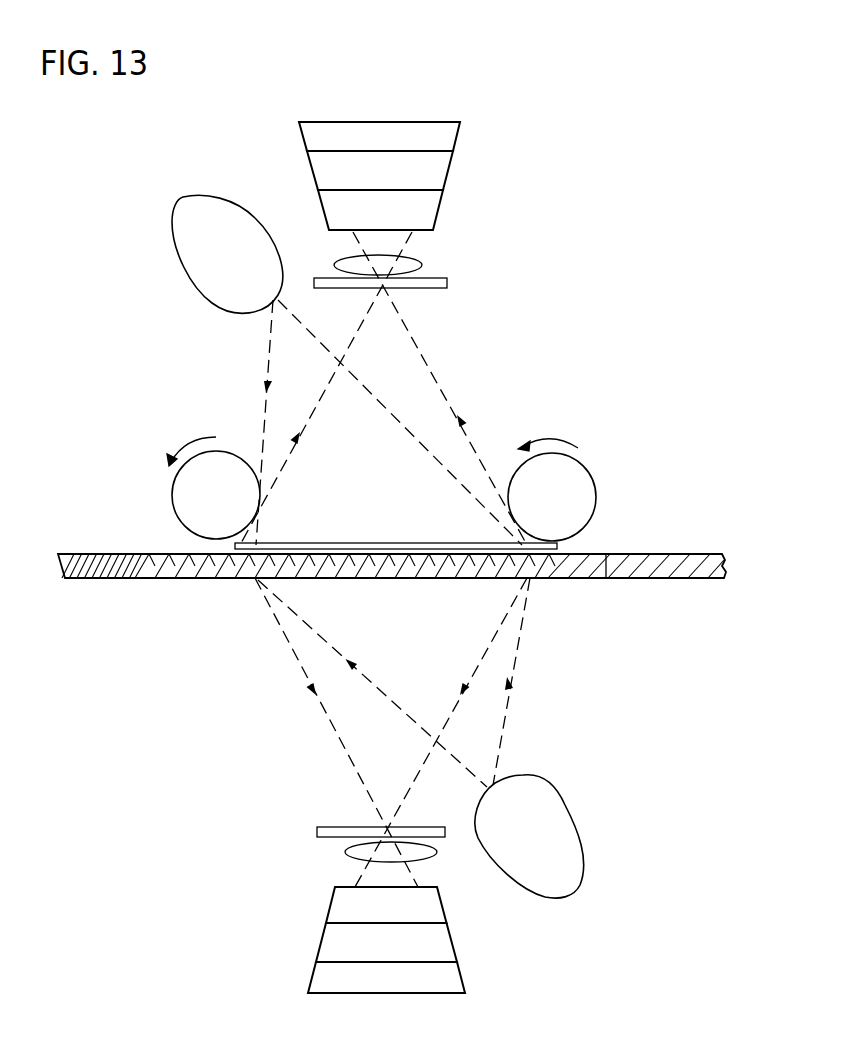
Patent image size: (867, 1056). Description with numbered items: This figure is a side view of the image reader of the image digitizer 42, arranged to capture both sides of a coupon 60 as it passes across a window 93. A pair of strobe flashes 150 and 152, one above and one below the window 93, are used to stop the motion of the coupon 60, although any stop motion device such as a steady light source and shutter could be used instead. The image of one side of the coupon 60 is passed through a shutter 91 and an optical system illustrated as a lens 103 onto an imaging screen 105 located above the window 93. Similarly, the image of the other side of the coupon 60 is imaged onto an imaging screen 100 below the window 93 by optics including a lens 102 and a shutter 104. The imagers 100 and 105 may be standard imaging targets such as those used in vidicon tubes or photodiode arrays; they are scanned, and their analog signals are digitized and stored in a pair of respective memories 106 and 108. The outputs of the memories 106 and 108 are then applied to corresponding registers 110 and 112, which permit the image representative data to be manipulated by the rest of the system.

The image digitizer 42 is at (133, 292).
The coupon 60 is at (325, 543).
The shutter 91 is at (430, 283).
The window 93 is at (593, 562).
The imaging screen 100 is at (343, 905).
The lens 102 is at (347, 853).
The lens 103 is at (423, 264).
The shutter 104 is at (320, 828).
The imaging screen 105 is at (433, 208).
The memory 106 is at (437, 172).
The memory 108 is at (325, 945).
The register 110 is at (447, 141).
The register 112 is at (315, 977).
The strobe flash 150 is at (208, 215).
The strobe flash 152 is at (560, 847).